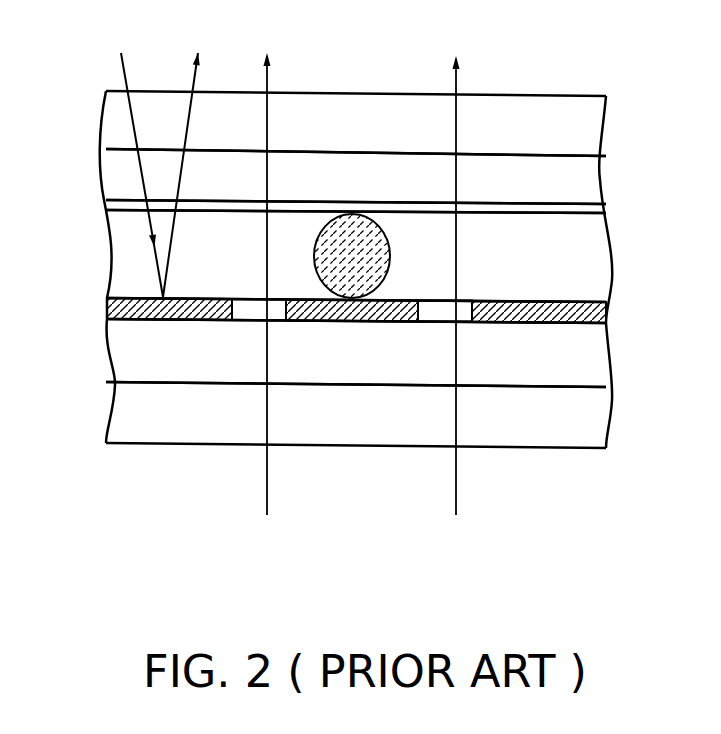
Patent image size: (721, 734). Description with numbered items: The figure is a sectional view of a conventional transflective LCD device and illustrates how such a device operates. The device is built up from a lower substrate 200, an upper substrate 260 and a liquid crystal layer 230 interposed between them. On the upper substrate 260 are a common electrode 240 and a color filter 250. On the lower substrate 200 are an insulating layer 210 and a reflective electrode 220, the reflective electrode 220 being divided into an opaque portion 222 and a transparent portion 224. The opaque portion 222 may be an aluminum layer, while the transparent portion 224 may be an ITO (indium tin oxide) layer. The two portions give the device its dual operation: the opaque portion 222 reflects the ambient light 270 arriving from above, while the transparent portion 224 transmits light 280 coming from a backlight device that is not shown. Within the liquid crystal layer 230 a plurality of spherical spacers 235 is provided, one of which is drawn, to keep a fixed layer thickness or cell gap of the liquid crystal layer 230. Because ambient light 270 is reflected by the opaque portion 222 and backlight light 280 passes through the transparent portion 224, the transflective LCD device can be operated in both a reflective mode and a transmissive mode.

The lower substrate 200 is at (595, 424).
The insulating layer 210 is at (597, 363).
The reflective electrode 220 is at (606, 310).
The opaque portion 222 is at (187, 324).
The transparent portion 224 is at (245, 324).
The liquid crystal layer 230 is at (597, 245).
The spherical spacer 235 is at (360, 243).
The common electrode 240 is at (585, 208).
The color filter 250 is at (587, 182).
The upper substrate 260 is at (598, 123).
The ambient light 270 is at (122, 72).
The light from the backlight device 280 is at (267, 470).